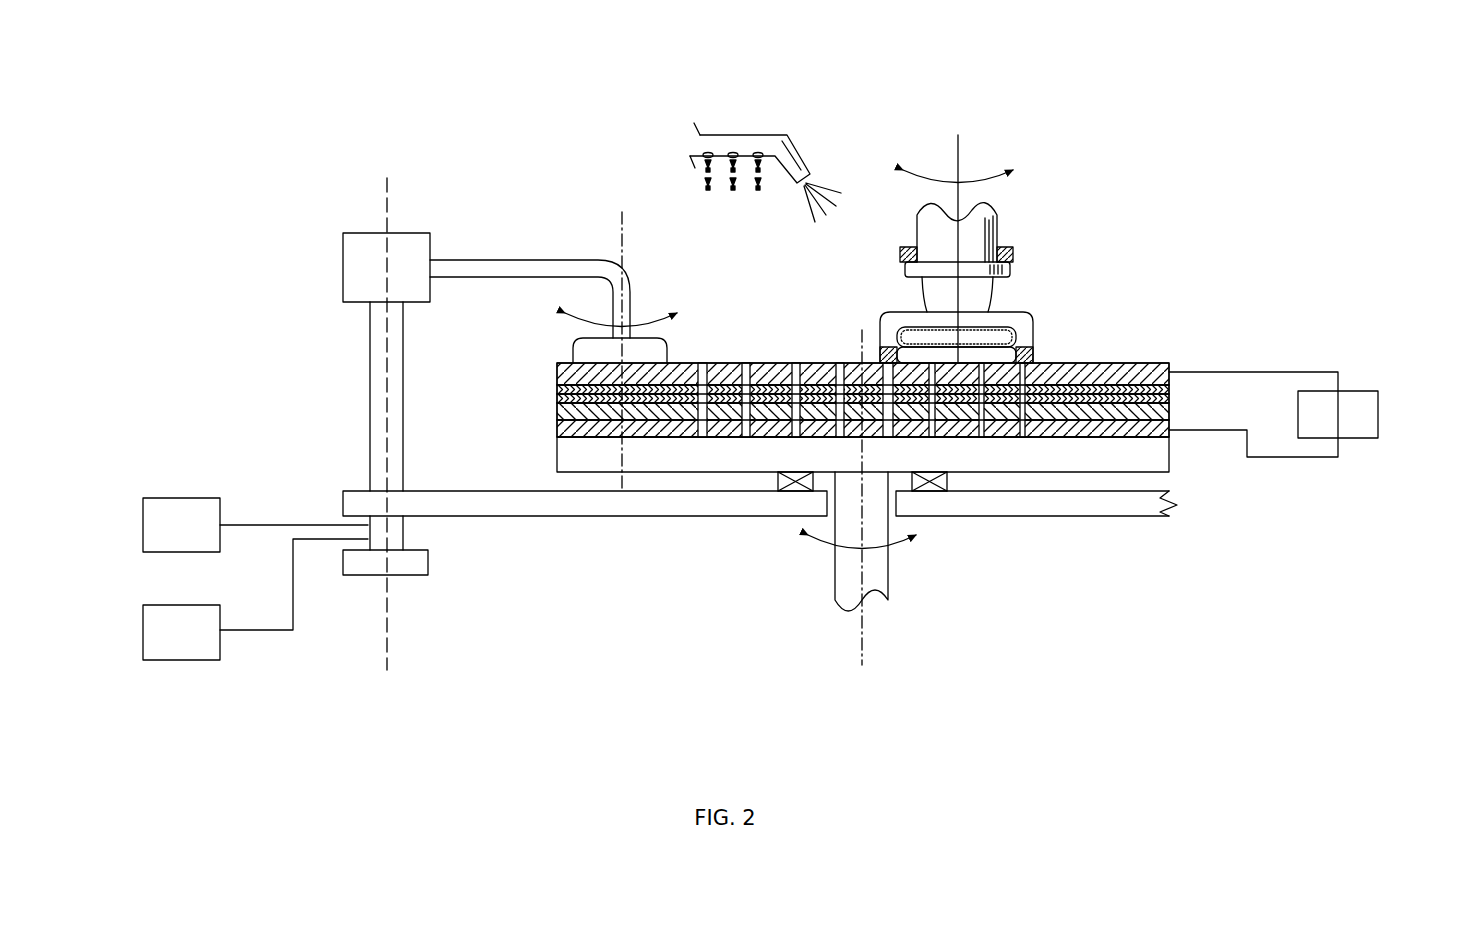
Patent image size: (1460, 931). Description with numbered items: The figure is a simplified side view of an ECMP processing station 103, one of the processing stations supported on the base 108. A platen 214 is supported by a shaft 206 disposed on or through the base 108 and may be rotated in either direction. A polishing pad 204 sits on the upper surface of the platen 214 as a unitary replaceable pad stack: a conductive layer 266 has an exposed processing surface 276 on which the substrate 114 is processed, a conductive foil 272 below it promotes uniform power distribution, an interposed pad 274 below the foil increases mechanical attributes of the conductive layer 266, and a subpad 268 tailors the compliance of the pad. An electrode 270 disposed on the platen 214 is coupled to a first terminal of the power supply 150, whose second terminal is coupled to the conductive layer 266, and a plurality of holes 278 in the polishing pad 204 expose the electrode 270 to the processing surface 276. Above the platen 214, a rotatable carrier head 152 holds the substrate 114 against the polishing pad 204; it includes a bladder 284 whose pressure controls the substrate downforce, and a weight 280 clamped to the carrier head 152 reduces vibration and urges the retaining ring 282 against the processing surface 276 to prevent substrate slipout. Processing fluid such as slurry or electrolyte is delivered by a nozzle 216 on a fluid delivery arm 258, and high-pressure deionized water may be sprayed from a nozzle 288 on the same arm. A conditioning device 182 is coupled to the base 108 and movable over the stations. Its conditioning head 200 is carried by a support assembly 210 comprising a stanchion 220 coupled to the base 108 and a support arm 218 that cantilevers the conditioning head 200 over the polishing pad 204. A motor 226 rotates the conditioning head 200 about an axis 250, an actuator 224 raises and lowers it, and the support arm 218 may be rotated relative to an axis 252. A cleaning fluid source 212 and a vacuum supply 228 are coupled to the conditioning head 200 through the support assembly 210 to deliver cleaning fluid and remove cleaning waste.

The processing station 103 is at (1075, 180).
The base 108 is at (343, 503).
The substrate 114 is at (1018, 348).
The power supply 150 is at (1378, 410).
The carrier head 152 is at (1003, 312).
The conditioning device 182 is at (520, 142).
The conditioning head 200 is at (648, 292).
The polishing pad 204 is at (536, 358).
The shaft 206 is at (840, 575).
The support assembly 210 is at (280, 203).
The cleaning fluid source 212 is at (163, 539).
The platen 214 is at (1045, 455).
The nozzle 216 is at (797, 160).
The support arm 218 is at (530, 258).
The stanchion 220 is at (370, 362).
The actuator 224 is at (360, 578).
The motor 226 is at (343, 264).
The vacuum supply 228 is at (163, 646).
The axis 250 is at (622, 232).
The axis 252 is at (385, 193).
The fluid delivery arm 258 is at (736, 135).
The conductive layer 266 is at (1140, 378).
The subpad 268 is at (1169, 400).
The electrode 270 is at (1169, 432).
The conductive foil 272 is at (1169, 388).
The interposed pad 274 is at (557, 403).
The processing surface 276 is at (775, 365).
The holes 278 is at (702, 370).
The weight 280 is at (900, 255).
The retaining ring 282 is at (1033, 355).
The bladder 284 is at (1012, 330).
The nozzle 288 is at (757, 135).